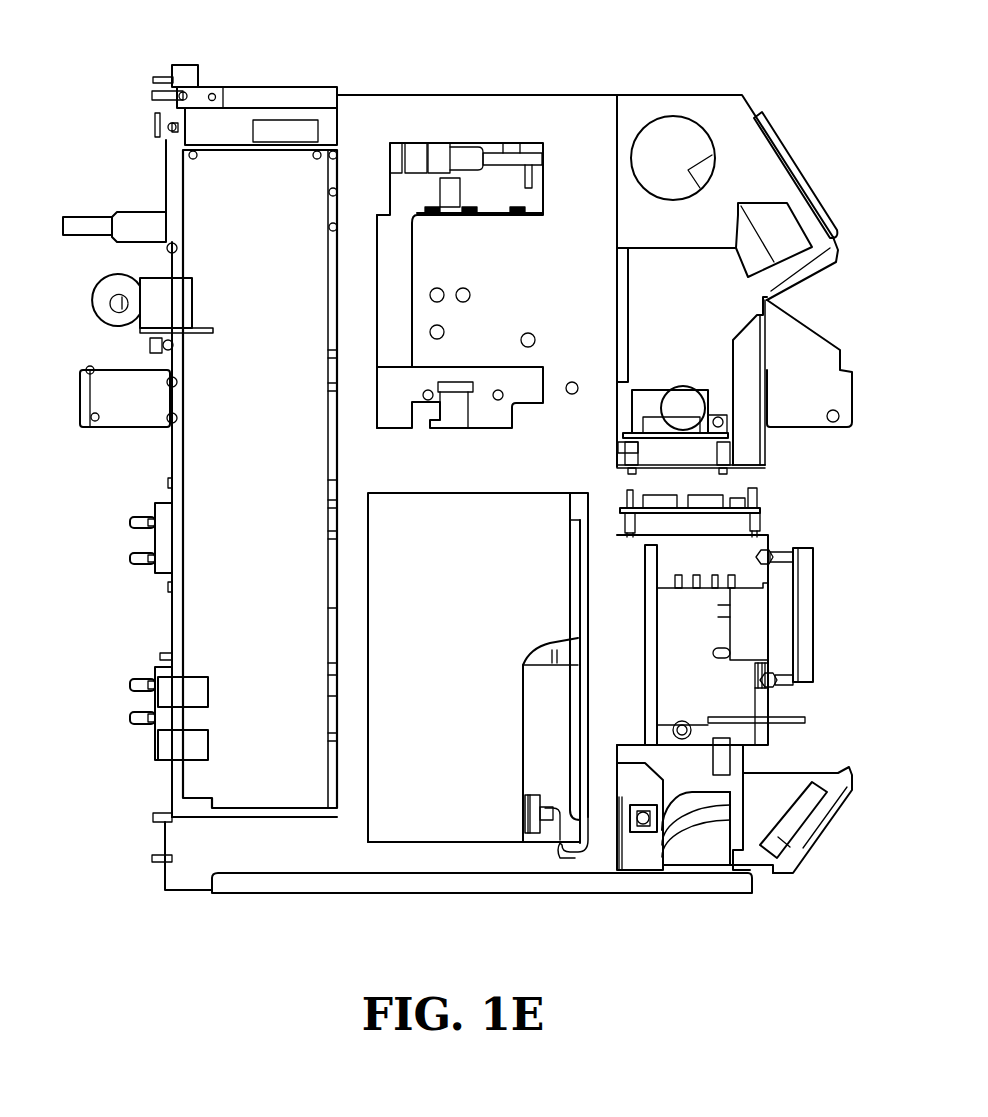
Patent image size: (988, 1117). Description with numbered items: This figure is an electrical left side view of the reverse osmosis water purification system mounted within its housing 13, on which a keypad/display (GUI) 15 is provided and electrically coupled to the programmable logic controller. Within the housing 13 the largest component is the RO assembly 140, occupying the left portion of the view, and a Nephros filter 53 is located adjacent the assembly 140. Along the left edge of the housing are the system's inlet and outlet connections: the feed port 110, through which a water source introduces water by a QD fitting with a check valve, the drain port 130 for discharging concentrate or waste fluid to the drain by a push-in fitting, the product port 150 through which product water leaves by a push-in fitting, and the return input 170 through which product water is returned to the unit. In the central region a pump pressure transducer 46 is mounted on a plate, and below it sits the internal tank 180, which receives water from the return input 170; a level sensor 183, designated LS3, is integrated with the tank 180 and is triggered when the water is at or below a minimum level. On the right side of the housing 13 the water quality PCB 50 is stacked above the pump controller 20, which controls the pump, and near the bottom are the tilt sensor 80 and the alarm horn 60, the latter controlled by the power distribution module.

The housing 13 is at (710, 98).
The keypad/display (GUI) 15 is at (806, 160).
The pump controller 20 is at (752, 694).
The pump pressure transducer 46 is at (425, 142).
The water quality PCB 50 is at (772, 503).
The Nephros filter 53 is at (98, 270).
The alarm horn 60 is at (812, 822).
The tilt sensor 80 is at (742, 863).
The feed port 110 is at (128, 523).
The drain port 130 is at (128, 558).
The RO assembly 140 is at (248, 160).
The product port 150 is at (128, 686).
The return input 170 is at (128, 720).
The internal tank 180 is at (458, 800).
The level sensor (LS3) 183 is at (540, 820).